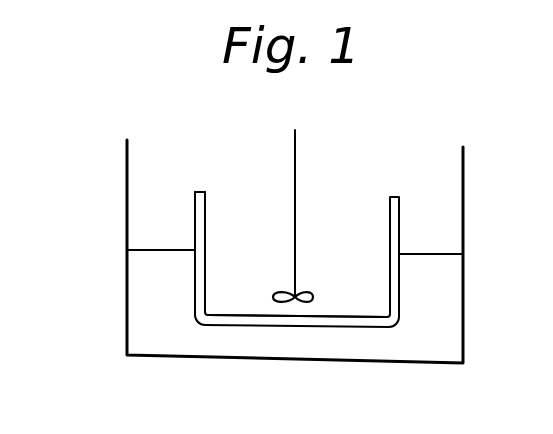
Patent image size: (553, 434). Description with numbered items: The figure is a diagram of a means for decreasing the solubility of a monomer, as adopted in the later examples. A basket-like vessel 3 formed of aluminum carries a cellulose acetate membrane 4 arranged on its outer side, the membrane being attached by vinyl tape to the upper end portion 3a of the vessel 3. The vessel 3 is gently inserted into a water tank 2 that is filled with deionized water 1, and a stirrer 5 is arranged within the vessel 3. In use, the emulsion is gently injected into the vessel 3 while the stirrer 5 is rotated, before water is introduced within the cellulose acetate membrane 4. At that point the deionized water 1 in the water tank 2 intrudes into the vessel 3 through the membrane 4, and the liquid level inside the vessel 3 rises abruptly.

The deionized water 1 is at (448, 328).
The water tank 2 is at (463, 207).
The basket-like vessel 3 is at (195, 284).
The upper end portion 3a is at (195, 192).
The cellulose acetate membrane 4 is at (197, 322).
The stirrer 5 is at (295, 167).